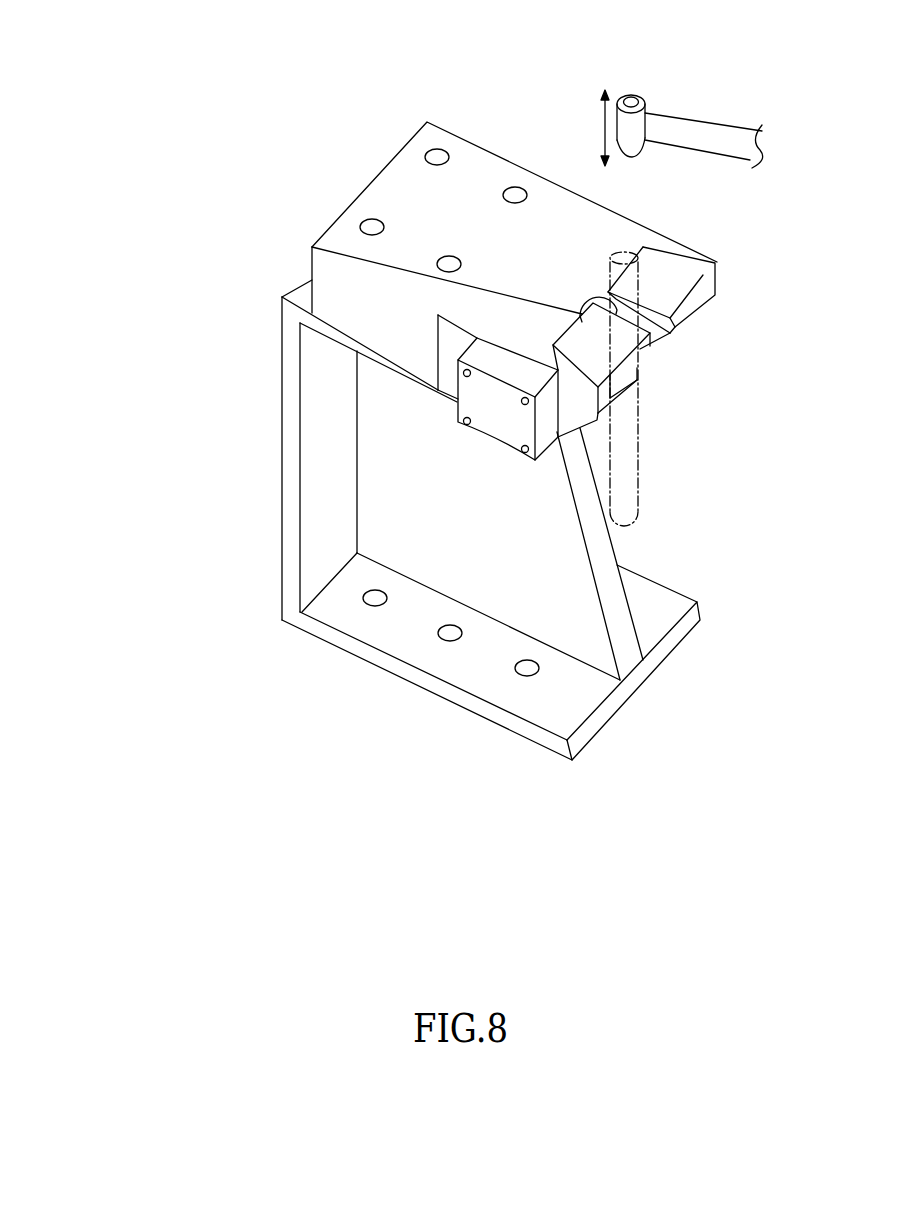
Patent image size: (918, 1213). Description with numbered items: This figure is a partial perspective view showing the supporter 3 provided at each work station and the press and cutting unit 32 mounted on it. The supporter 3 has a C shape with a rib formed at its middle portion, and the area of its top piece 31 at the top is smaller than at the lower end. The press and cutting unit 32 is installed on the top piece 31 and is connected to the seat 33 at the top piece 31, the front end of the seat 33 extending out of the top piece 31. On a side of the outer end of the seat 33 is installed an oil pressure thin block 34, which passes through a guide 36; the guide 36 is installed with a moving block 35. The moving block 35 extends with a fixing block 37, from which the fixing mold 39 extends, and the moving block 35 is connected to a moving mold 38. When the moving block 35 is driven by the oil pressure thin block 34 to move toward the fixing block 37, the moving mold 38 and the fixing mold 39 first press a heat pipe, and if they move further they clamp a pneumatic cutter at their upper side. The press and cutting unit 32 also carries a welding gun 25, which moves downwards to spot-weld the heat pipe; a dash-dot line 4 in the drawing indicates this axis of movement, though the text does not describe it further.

The supporter 3 is at (230, 502).
The axis of pin 4 is at (625, 453).
The welding gun 25 is at (700, 138).
The top piece 31 is at (288, 372).
The press and cutting unit 32 is at (698, 327).
The seat 33 is at (476, 170).
The oil pressure thin block 34 is at (478, 409).
The moving block 35 is at (520, 313).
The guide 36 is at (580, 296).
The fixing block 37 is at (705, 280).
The moving mold 38 is at (602, 343).
The fixing mold 39 is at (672, 288).